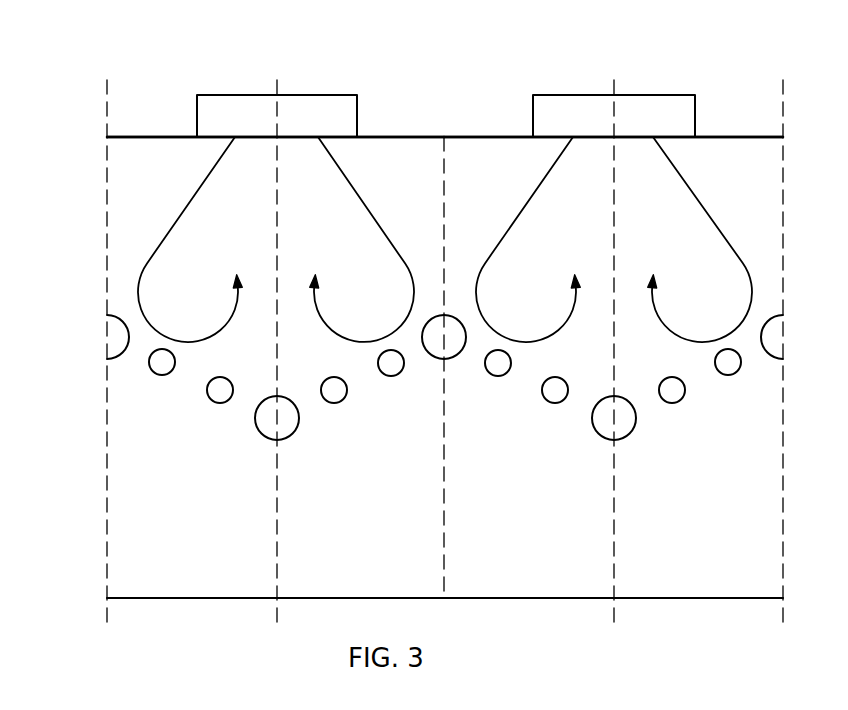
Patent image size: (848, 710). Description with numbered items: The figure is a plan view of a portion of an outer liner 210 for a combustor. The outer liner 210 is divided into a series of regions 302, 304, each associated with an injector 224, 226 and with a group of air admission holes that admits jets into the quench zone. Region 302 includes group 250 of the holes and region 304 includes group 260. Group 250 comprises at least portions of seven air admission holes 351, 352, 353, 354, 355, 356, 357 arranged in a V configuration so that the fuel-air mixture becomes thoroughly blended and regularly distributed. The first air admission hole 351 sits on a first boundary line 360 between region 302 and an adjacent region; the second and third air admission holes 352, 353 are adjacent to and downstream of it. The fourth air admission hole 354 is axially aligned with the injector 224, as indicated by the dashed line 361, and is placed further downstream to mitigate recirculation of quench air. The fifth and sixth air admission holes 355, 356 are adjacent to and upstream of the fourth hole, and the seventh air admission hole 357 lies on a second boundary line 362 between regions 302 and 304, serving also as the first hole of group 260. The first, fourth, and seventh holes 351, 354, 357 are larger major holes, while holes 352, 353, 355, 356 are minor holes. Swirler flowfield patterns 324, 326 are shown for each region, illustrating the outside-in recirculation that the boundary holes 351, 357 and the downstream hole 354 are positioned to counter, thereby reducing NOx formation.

The outer liner 210 is at (85, 134).
The injector 224 is at (225, 97).
The injector 226 is at (570, 97).
The region 302 is at (155, 143).
The region 304 is at (498, 143).
The swirler flowfield pattern 324 is at (197, 203).
The swirler flowfield pattern 326 is at (530, 203).
The first air admission hole 351 is at (111, 314).
The second air admission hole 352 is at (162, 375).
The third air admission hole 353 is at (220, 403).
The fourth air admission hole 354 is at (284, 439).
The fifth air admission hole 355 is at (334, 403).
The sixth air admission hole 356 is at (391, 376).
The seventh air admission hole 357 is at (451, 358).
The first boundary line 360 is at (107, 203).
The dashed line 361 is at (277, 222).
The second boundary line 362 is at (444, 190).
The group of air admission holes 250 is at (179, 447).
The group of air admission holes 260 is at (542, 417).